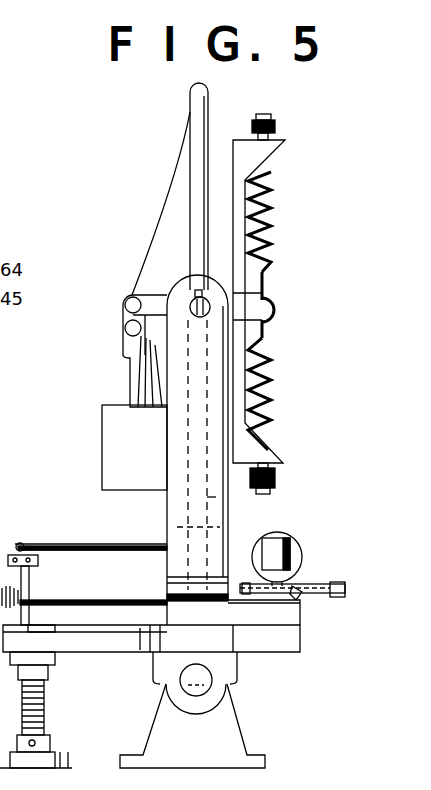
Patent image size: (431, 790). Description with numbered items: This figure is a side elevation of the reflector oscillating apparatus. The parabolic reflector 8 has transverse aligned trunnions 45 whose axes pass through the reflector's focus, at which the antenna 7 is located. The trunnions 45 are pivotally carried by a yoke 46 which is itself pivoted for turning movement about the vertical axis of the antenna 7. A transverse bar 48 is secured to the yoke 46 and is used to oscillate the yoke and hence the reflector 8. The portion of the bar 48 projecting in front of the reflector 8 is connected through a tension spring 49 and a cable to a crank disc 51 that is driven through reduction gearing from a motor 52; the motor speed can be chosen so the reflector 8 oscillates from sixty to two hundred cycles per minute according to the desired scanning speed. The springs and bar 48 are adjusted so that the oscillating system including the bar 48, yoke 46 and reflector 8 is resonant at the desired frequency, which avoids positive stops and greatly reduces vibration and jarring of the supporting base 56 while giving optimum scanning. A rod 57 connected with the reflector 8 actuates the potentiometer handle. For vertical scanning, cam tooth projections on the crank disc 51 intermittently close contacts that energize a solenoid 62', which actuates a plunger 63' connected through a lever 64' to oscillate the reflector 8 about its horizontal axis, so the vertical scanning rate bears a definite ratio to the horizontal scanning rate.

The antenna 7 is at (203, 297).
The reflector 8 is at (162, 215).
The trunnions 45 is at (189, 301).
The yoke 46 is at (170, 513).
The transverse bar 48 is at (133, 603).
The tension spring 49 is at (300, 584).
The crank disc 51 is at (246, 582).
The motor 52 is at (297, 553).
The supporting base 56 is at (108, 643).
The rod 57 is at (105, 548).
The solenoid 62' is at (113, 447).
The plunger 63' is at (121, 371).
The lever 64' is at (125, 333).